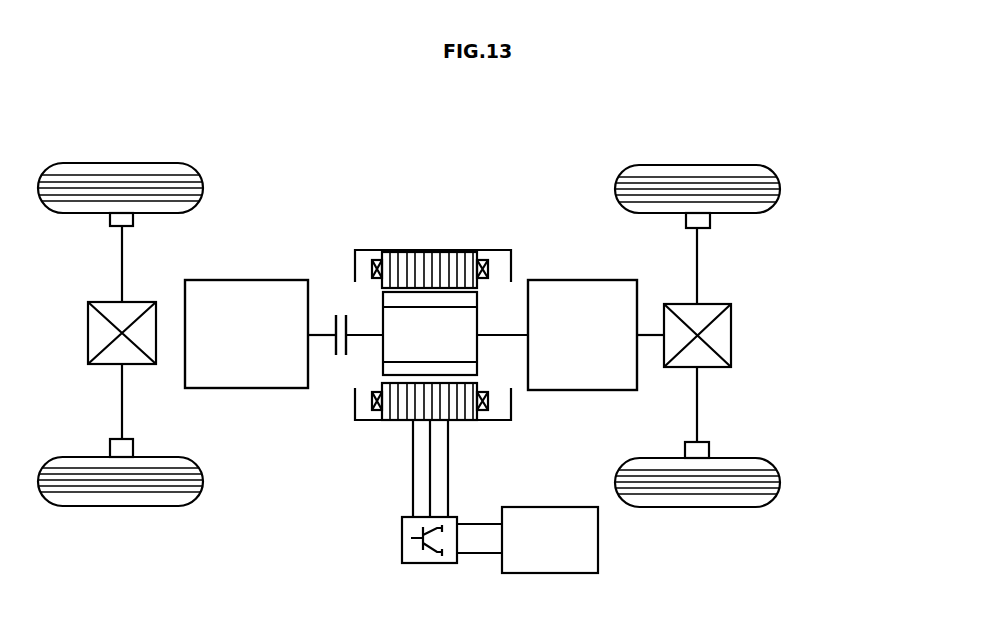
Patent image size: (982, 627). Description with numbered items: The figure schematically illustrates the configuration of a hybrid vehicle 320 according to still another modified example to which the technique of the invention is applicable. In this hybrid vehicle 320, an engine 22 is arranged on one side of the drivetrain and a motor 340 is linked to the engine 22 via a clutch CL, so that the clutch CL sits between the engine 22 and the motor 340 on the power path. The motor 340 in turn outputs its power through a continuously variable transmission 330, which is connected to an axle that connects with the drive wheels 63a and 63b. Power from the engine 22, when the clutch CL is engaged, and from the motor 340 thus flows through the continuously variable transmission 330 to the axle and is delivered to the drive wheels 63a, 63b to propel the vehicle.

The hybrid vehicle 320 is at (343, 142).
The engine 22 is at (248, 280).
The clutch CL is at (339, 358).
The motor 340 is at (432, 250).
The continuously variable transmission 330 is at (585, 280).
The drive wheel 63a is at (700, 165).
The drive wheel 63b is at (695, 507).